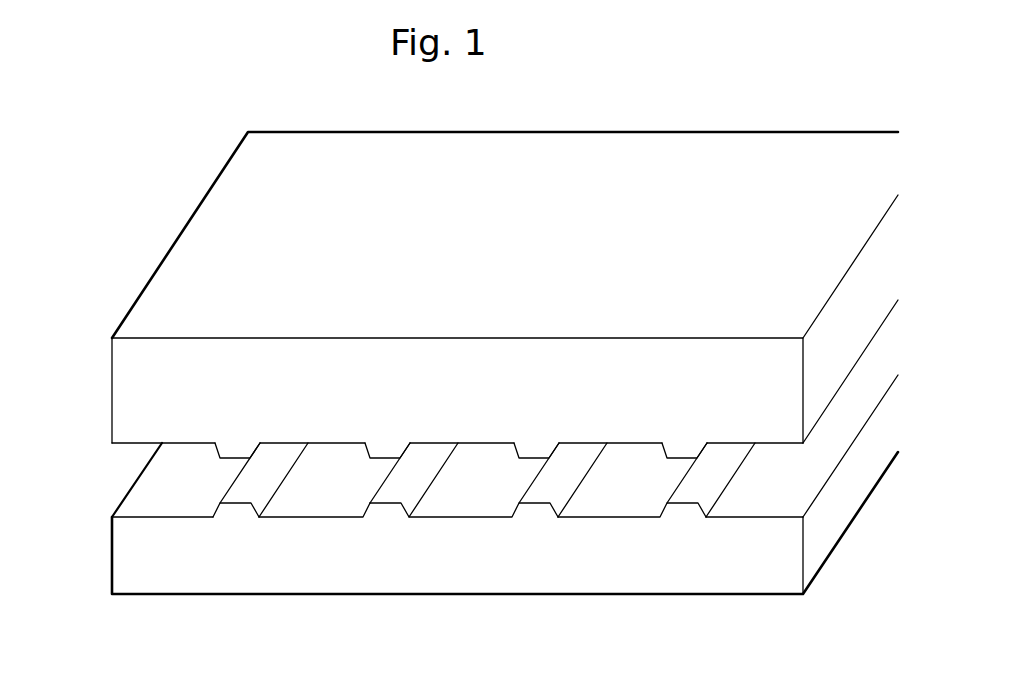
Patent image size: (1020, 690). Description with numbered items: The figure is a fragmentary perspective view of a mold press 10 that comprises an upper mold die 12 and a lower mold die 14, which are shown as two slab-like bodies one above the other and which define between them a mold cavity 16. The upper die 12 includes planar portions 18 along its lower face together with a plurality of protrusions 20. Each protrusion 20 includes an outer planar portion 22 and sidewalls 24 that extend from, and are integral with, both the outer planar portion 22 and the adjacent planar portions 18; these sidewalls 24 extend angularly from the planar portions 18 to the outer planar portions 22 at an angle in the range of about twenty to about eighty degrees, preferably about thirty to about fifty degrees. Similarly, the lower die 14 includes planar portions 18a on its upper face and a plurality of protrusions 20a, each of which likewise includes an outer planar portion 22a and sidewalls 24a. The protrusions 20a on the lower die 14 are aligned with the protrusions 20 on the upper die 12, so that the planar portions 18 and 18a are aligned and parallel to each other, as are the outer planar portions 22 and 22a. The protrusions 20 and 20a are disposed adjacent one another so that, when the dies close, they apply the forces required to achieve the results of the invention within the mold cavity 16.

The mold press 10 is at (155, 164).
The upper mold die 12 is at (747, 152).
The lower mold die 14 is at (654, 578).
The mold cavity 16 is at (99, 472).
The planar portions 18 is at (181, 456).
The protrusions 20 is at (236, 444).
The outer planar portions 22 is at (518, 469).
The sidewalls 24 is at (423, 448).
The planar portions 18a is at (151, 505).
The protrusions 20a is at (388, 516).
The outer planar portions 22a is at (233, 492).
The sidewalls 24a is at (353, 510).